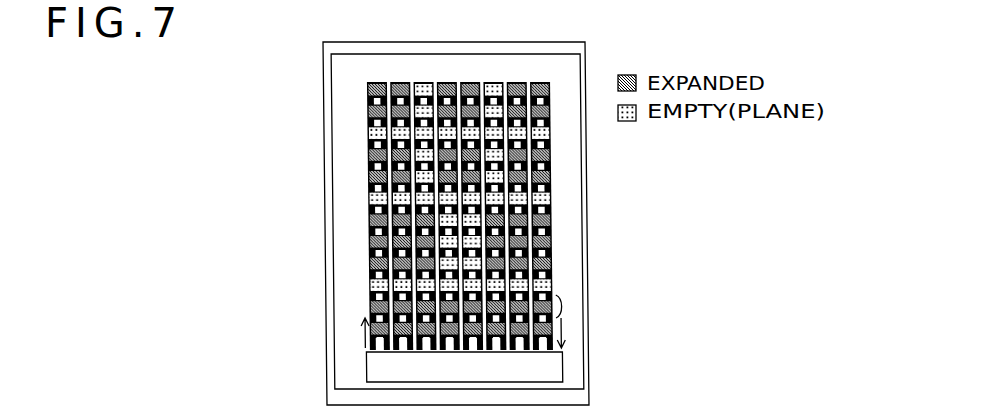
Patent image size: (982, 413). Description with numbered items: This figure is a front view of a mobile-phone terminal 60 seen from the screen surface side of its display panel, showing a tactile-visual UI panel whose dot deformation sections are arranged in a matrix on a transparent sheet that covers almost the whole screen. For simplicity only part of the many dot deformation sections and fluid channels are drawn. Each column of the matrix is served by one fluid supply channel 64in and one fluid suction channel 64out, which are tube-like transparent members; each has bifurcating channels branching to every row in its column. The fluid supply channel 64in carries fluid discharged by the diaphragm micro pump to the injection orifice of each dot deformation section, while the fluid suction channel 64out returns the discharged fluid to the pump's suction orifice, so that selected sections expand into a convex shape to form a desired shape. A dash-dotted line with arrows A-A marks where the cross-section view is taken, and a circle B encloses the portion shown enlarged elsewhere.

The mobile-phone terminal 60 is at (287, 85).
The fluid supply channel 64in is at (395, 83).
The fluid suction channel 64out is at (388, 83).
The arrows A- A is at (310, 157).
The circle B is at (560, 302).